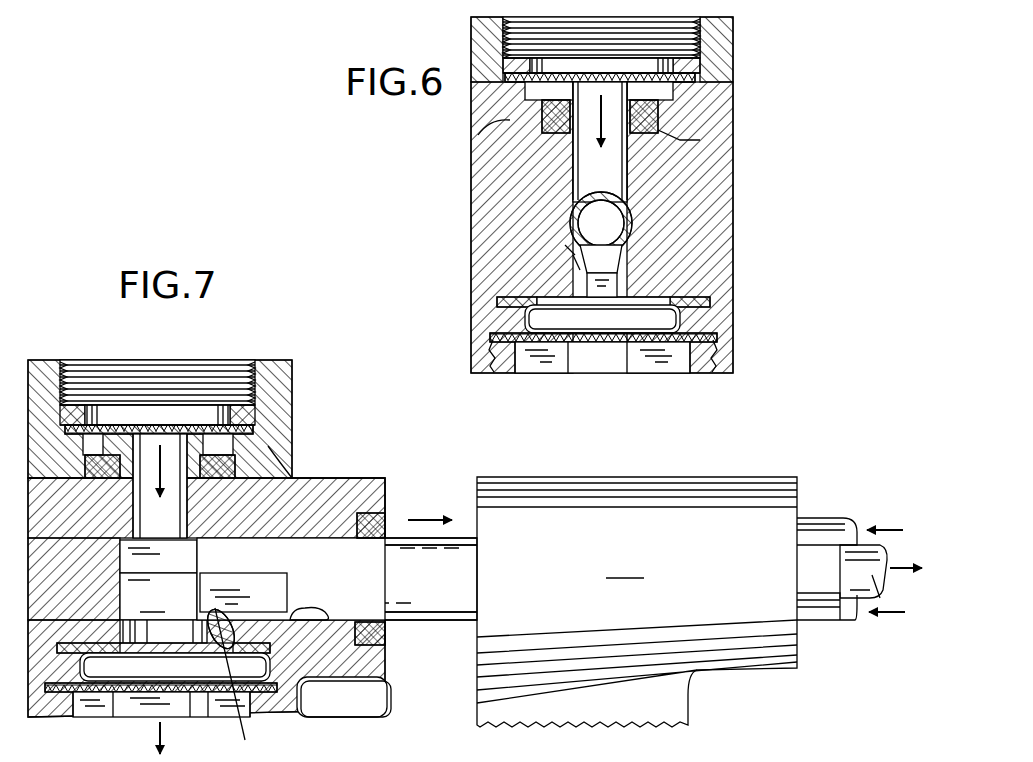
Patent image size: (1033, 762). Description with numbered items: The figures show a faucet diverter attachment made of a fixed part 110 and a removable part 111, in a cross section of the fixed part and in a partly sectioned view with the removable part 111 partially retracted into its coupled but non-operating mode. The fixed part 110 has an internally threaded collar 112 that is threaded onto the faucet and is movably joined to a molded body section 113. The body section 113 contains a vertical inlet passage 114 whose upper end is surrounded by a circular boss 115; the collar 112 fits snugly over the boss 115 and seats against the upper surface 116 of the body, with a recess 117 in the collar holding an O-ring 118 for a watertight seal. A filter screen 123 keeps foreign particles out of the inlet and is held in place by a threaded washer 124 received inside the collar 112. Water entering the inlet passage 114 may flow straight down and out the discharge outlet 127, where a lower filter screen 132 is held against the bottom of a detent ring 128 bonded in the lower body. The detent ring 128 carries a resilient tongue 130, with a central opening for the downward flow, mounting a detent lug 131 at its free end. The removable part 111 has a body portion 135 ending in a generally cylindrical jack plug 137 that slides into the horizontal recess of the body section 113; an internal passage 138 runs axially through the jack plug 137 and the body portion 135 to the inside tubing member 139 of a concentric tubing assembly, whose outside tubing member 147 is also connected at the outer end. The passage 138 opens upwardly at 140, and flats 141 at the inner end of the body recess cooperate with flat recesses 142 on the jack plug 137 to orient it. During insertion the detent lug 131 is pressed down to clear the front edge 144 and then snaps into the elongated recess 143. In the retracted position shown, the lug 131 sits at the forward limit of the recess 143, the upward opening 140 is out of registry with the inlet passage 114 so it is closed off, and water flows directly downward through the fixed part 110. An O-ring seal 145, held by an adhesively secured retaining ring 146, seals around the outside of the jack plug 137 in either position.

In FIG. 7, the fixed part 110 is at (345, 470).
In FIG. 7, the removable part 111 is at (614, 619).
In FIG. 6, the internally threaded collar 112 is at (490, 31).
In FIG. 7, the internally threaded collar 112 is at (272, 372).
In FIG. 7, the body section 113 is at (378, 478).
In FIG. 6, the inlet passage 114 is at (625, 172).
In FIG. 7, the inlet passage 114 is at (160, 486).
In FIG. 6, the circular boss 115 is at (548, 108).
In FIG. 6, the upper surface 116 is at (481, 133).
In FIG. 7, the upper surface 116 is at (283, 470).
In FIG. 6, the recess 117 is at (655, 119).
In FIG. 6, the O-ring 118 is at (690, 138).
In FIG. 7, the O-ring 118 is at (218, 462).
In FIG. 6, the filter screen 123 is at (695, 79).
In FIG. 7, the filter screen 123 is at (150, 430).
In FIG. 6, the threaded washer 124 is at (700, 66).
In FIG. 7, the threaded washer 124 is at (258, 415).
In FIG. 7, the discharge outlet 127 is at (127, 708).
In FIG. 6, the detent ring 128 is at (604, 292).
In FIG. 7, the detent ring 128 is at (242, 685).
In FIG. 6, the resilient tongue 130 is at (603, 296).
In FIG. 7, the resilient tongue 130 is at (152, 646).
In FIG. 7, the detent lug 131 is at (222, 618).
In FIG. 6, the filter screen 132 is at (575, 345).
In FIG. 7, the filter screen 132 is at (190, 705).
In FIG. 7, the body portion 135 is at (683, 495).
In FIG. 6, the jack plug 137 is at (720, 264).
In FIG. 7, the jack plug 137 is at (428, 600).
In FIG. 6, the internal passage 138 is at (608, 223).
In FIG. 7, the inside tubing member 139 is at (865, 568).
In FIG. 6, the upwardly opening end 140 is at (582, 203).
In FIG. 6, the flats 141 is at (640, 262).
In FIG. 7, the flats 141 is at (158, 556).
In FIG. 6, the flat recesses 142 is at (565, 248).
In FIG. 7, the flat recesses 142 is at (262, 592).
In FIG. 6, the recess 143 is at (575, 263).
In FIG. 7, the recess 143 is at (308, 610).
In FIG. 7, the front edge 144 is at (215, 618).
In FIG. 7, the O-ring seal 145 is at (366, 540).
In FIG. 7, the retaining ring 146 is at (386, 532).
In FIG. 7, the outside tubing member 147 is at (826, 612).